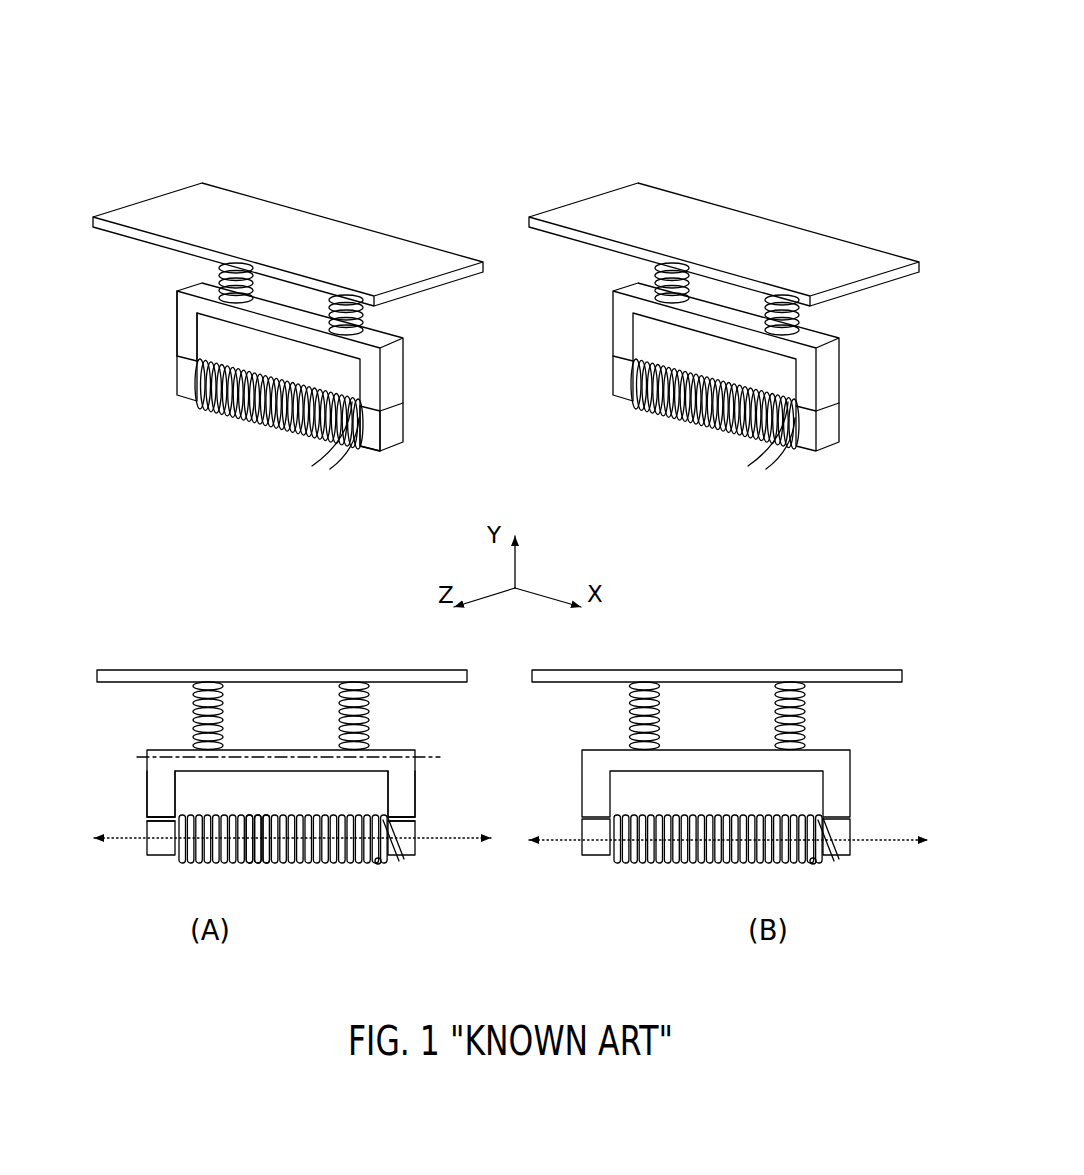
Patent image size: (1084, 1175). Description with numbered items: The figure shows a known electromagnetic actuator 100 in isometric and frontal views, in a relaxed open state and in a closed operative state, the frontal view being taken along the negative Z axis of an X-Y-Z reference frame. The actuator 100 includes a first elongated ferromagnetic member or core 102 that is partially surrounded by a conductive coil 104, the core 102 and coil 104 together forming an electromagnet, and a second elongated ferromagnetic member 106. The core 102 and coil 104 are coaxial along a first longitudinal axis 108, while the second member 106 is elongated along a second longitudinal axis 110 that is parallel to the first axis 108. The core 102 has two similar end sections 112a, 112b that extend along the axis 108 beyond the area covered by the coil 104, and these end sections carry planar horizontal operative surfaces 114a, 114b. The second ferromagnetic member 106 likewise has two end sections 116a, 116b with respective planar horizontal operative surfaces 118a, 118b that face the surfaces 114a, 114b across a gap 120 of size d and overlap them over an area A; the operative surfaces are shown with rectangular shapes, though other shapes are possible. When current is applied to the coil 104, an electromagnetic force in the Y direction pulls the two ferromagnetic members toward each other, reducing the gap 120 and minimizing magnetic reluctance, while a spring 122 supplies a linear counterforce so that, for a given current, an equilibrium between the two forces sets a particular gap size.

The EM actuator 100 is at (547, 42).
The first elongated ferromagnetic member (core) 102 is at (255, 840).
The conductive coil 104 is at (333, 860).
The second elongated ferromagnetic member 106 is at (330, 340).
The first longitudinal axis 108 is at (568, 842).
The second longitudinal axis 110 is at (430, 758).
The end section 112a is at (177, 381).
The end section 112b is at (401, 437).
The operative surface 114a is at (160, 828).
The operative surface 114b is at (403, 828).
The end section 116a is at (163, 809).
The end section 116b is at (400, 809).
The operative surface 118a is at (148, 819).
The operative surface 118b is at (415, 819).
The gap 120 is at (177, 358).
The spring 122 is at (193, 712).